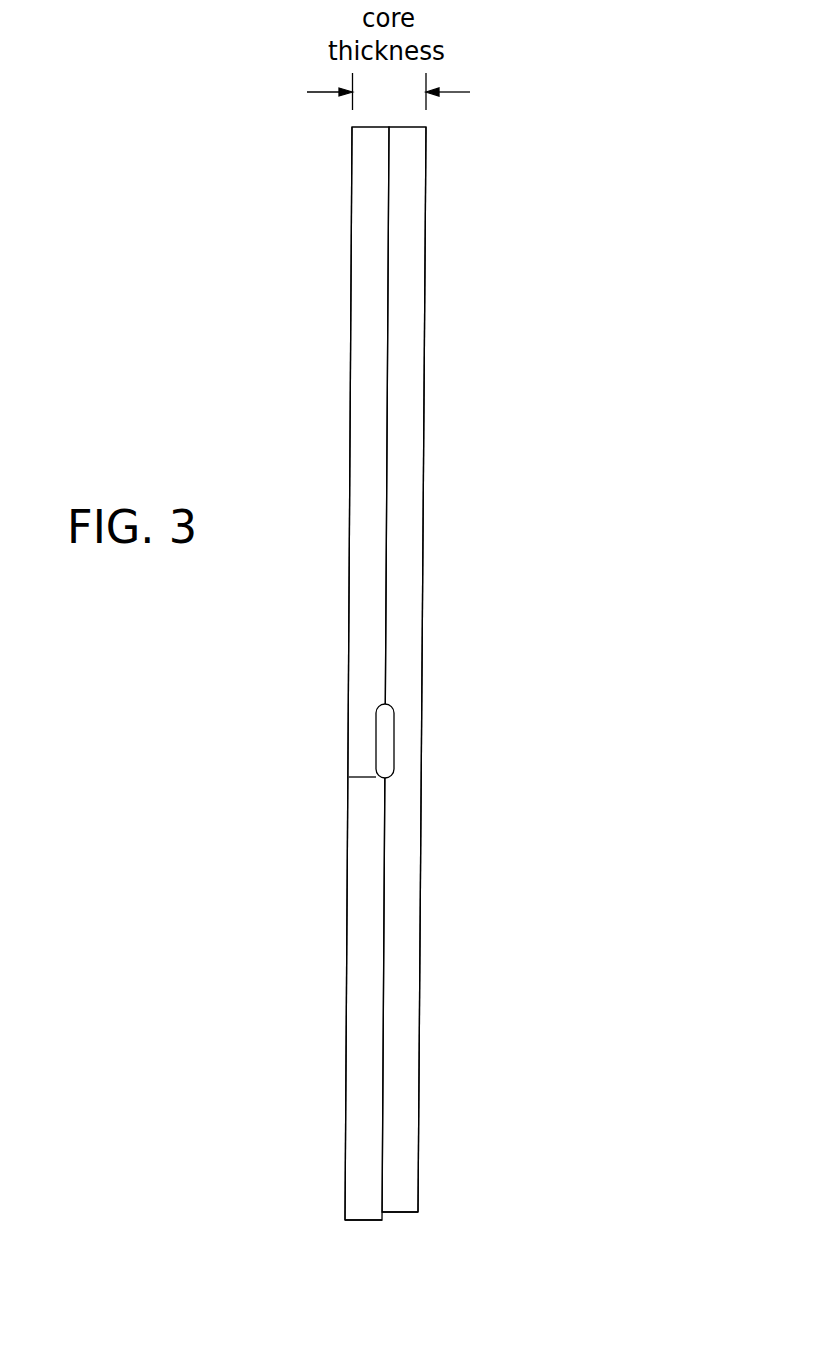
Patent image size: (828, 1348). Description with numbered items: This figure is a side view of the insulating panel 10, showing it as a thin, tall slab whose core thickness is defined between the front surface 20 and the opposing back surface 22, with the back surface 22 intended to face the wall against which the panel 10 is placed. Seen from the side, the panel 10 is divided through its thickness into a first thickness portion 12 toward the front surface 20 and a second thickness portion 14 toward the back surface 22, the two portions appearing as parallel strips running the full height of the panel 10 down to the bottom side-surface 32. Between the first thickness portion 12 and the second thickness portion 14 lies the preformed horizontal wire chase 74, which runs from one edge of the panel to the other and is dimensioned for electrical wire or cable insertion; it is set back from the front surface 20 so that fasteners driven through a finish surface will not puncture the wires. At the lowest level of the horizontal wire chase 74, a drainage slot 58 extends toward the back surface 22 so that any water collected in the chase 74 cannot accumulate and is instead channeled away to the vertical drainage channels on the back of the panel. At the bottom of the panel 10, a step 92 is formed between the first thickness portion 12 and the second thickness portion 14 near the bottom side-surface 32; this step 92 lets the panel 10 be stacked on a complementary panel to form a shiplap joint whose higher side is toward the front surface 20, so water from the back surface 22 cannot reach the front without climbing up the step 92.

The insulating panel 10 is at (552, 471).
The first thickness portion 12 is at (413, 444).
The second thickness portion 14 is at (369, 435).
The front surface 20 is at (425, 291).
The back surface 22 is at (350, 291).
The bottom side-surface 32 is at (381, 1240).
The drainage slot 58 is at (365, 780).
The horizontal wire chase 74 is at (390, 727).
The step 92 is at (388, 1217).